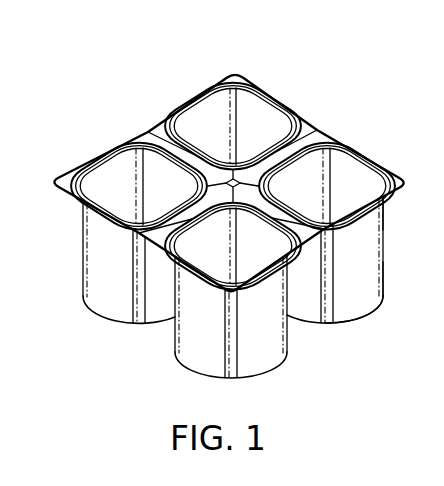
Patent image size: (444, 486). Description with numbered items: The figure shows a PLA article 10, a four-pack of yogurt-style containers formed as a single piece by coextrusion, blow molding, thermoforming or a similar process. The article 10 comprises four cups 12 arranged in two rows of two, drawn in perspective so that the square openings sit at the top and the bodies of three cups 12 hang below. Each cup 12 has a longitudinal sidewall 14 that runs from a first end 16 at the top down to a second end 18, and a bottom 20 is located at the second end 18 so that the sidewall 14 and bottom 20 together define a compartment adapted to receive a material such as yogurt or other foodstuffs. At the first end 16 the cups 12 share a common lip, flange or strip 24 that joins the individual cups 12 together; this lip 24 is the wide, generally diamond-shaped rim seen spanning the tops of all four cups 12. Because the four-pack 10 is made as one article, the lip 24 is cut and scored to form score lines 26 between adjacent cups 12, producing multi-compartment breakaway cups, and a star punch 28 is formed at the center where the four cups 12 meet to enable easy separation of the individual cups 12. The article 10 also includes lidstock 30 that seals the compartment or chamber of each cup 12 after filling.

The PLA article 10 is at (232, 203).
The cup 12 is at (98, 268).
The longitudinal sidewall 14 is at (92, 216).
The first end 16 is at (378, 218).
The second end 18 is at (367, 287).
The bottom 20 is at (353, 317).
The lip, flange or strip 24 is at (232, 82).
The score line 26 is at (318, 130).
The star punch 28 is at (230, 180).
The lidstock 30 is at (354, 178).